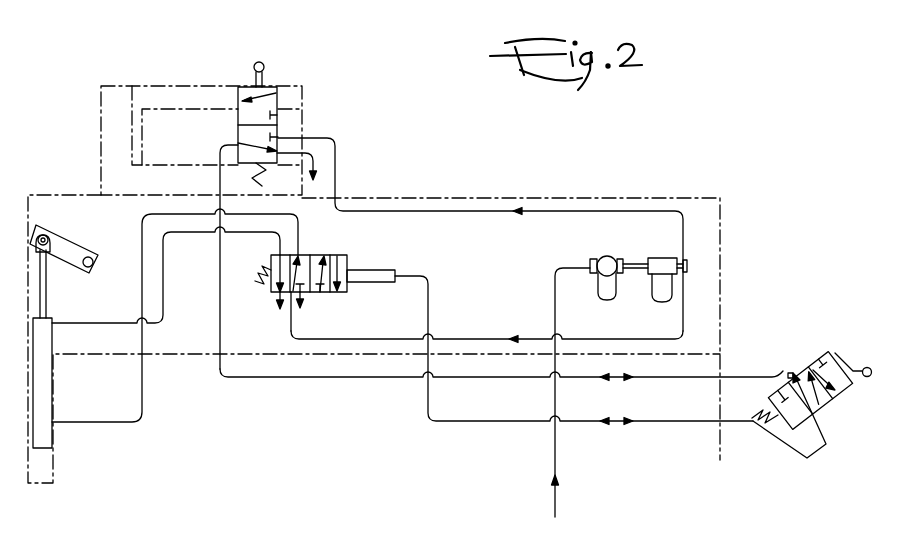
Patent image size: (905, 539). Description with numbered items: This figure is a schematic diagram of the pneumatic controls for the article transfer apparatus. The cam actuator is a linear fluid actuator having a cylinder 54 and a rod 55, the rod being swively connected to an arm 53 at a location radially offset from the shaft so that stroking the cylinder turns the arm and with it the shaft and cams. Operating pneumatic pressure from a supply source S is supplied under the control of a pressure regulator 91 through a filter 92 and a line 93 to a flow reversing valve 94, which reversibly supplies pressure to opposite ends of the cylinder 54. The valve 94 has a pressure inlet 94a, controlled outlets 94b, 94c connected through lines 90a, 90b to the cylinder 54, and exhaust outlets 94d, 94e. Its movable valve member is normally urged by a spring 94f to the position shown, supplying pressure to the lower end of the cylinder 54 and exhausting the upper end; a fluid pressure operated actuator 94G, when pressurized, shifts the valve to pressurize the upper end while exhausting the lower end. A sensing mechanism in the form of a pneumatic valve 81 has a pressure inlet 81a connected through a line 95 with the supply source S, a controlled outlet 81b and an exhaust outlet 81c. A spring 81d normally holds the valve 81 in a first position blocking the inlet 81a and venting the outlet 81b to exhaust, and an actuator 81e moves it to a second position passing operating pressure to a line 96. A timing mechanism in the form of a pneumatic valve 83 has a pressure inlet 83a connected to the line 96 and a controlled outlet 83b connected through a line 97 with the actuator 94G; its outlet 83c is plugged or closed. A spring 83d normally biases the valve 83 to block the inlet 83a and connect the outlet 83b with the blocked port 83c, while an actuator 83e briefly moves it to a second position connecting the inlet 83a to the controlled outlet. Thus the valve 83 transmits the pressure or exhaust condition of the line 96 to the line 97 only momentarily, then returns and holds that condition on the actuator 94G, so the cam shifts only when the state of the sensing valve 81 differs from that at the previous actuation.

The arm 53 is at (75, 240).
The cylinder 54 is at (45, 432).
The rod 55 is at (48, 292).
The sensing mechanism valve 81 is at (278, 88).
The pressure inlet 81a is at (305, 138).
The controlled outlet 81b is at (238, 146).
The exhaust outlet 81c is at (297, 173).
The spring 81d is at (247, 182).
The actuator 81e is at (262, 63).
The timing mechanism valve 83 is at (820, 352).
The pressure inlet 83a is at (785, 372).
The controlled outlet 83b is at (826, 418).
The outlet 83c is at (792, 370).
The spring 83d is at (750, 404).
The actuator 83e is at (866, 366).
The line 90a is at (142, 258).
The line 90b is at (166, 300).
The pressure regulator 91 is at (605, 262).
The filter 92 is at (661, 258).
The line 93 is at (457, 336).
The flow reversing valve 94 is at (348, 258).
The pressure inlet 94a is at (294, 326).
The controlled outlet 94b is at (300, 253).
The controlled outlet 94c is at (276, 250).
The exhaust outlet 94d is at (276, 310).
The exhaust outlet 94e is at (306, 298).
The spring 94f is at (262, 287).
The actuator 94G is at (375, 272).
The line 95 is at (445, 210).
The line 96 is at (345, 380).
The line 97 is at (472, 424).
The supply source S is at (560, 460).